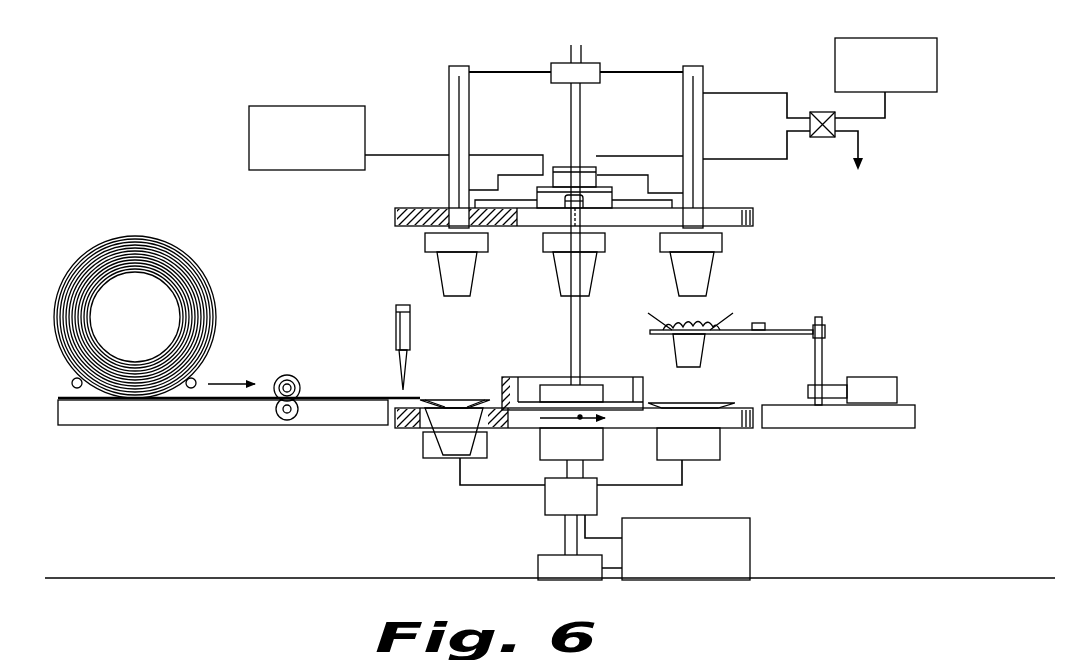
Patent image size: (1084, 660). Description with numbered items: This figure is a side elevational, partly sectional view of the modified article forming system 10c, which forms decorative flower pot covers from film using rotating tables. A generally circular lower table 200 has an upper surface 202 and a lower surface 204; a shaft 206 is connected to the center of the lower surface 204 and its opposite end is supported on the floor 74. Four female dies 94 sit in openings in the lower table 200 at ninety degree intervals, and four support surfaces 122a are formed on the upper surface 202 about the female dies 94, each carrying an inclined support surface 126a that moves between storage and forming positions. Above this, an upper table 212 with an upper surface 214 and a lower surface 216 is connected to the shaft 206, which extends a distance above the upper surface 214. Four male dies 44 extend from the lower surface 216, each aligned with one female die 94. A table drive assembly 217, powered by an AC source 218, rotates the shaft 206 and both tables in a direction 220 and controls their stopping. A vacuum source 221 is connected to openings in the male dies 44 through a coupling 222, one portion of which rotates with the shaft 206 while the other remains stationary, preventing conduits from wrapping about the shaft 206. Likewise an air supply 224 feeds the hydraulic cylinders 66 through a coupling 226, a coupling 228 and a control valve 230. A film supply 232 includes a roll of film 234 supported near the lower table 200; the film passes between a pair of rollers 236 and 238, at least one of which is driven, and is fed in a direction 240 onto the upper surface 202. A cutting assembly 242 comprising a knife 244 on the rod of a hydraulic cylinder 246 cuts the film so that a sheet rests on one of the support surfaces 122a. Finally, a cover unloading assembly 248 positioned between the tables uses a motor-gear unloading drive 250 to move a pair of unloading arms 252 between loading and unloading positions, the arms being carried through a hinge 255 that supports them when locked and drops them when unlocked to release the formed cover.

The modified system 10c is at (393, 86).
The male die 44 is at (473, 268).
The hydraulic cylinder 66 is at (448, 86).
The floor 74 is at (280, 576).
The female die 94 is at (440, 445).
The support surface 122a is at (432, 396).
The inclined support surface 126a is at (484, 402).
The lower table 200 is at (582, 434).
The upper surface 202 is at (655, 395).
The lower surface 204 is at (410, 430).
The shaft 206 is at (560, 533).
The upper table 212 is at (604, 201).
The upper surface 214 is at (713, 208).
The lower surface 216 is at (740, 226).
The table drive assembly 217 is at (535, 567).
The AC source 218 is at (752, 532).
The direction 220 is at (582, 420).
The vacuum source 221 is at (300, 170).
The coupling 222 is at (552, 200).
The air supply 224 is at (888, 38).
The coupling 226 is at (563, 65).
The coupling 228 is at (583, 180).
The control valve 230 is at (822, 110).
The film supply 232 is at (163, 289).
The roll of film 234 is at (200, 300).
The roller 236 is at (300, 365).
The roller 238 is at (283, 421).
The direction 240 is at (237, 384).
The cutting assembly 242 is at (371, 323).
The knife 244 is at (403, 368).
The hydraulic cylinder 246 is at (396, 340).
The cover unloading assembly 248 is at (832, 324).
The motor-gear unloading drive 250 is at (877, 383).
The unloading arm 252 is at (688, 338).
The hinge 255 is at (763, 322).